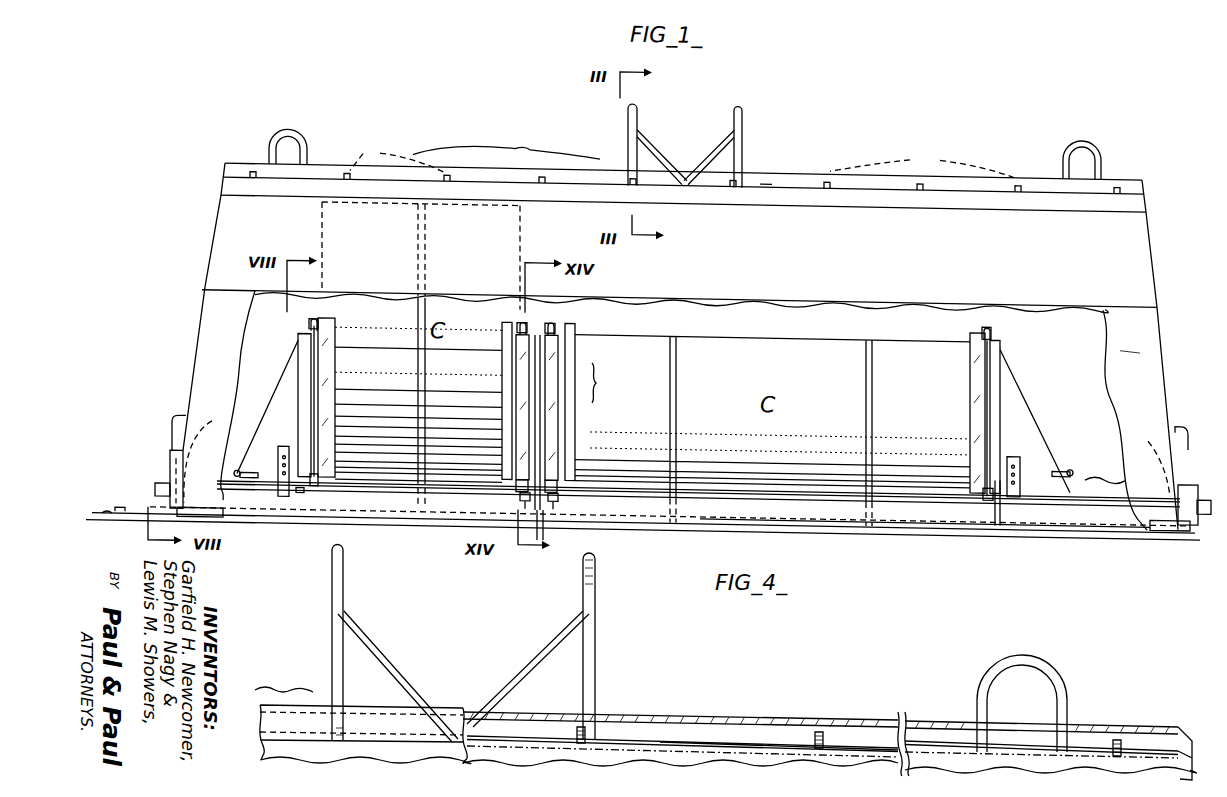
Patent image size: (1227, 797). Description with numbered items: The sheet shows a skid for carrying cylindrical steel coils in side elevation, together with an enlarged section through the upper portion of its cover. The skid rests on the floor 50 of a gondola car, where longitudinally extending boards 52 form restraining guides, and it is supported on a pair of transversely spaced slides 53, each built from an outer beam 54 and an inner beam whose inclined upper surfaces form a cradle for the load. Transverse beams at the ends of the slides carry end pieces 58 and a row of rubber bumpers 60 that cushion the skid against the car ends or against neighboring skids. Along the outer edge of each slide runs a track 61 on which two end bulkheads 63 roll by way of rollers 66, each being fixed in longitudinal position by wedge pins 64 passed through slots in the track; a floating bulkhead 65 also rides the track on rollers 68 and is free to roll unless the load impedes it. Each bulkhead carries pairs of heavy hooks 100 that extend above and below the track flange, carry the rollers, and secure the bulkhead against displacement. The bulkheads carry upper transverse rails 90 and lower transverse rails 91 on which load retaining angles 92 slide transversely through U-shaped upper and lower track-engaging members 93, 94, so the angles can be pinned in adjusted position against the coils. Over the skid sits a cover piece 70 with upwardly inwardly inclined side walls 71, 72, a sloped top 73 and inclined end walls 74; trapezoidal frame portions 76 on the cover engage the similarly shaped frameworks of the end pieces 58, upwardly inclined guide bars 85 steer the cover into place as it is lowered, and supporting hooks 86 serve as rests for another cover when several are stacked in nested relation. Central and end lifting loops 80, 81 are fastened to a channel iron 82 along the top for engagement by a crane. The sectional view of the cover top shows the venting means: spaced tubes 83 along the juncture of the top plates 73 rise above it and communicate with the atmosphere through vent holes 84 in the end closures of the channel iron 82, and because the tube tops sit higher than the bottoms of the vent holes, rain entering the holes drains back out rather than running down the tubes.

In FIG. 1, the floor 50 is at (93, 507).
In FIG. 1, the longitudinally extending boards 52 is at (130, 507).
In FIG. 1, the slide 53 is at (1105, 472).
In FIG. 1, the outer beam 54 is at (901, 516).
In FIG. 1, the end piece 58 is at (170, 470).
In FIG. 1, the bumper 60 is at (155, 484).
In FIG. 1, the track 61 is at (678, 496).
In FIG. 1, the end bulkhead 63 is at (292, 337).
In FIG. 1, the wedge pin 64 is at (280, 456).
In FIG. 1, the floating bulkhead 65 is at (652, 423).
In FIG. 1, the roller 66 is at (237, 469).
In FIG. 1, the roller 68 is at (520, 487).
In FIG. 1, the cover piece 70 is at (506, 138).
In FIG. 4, the cover piece 70 is at (363, 711).
In FIG. 1, the side wall 71 is at (1150, 336).
In FIG. 1, the side wall 72 is at (1140, 224).
In FIG. 1, the sloped top 73 is at (1135, 185).
In FIG. 4, the sloped top 73 is at (925, 741).
In FIG. 1, the inclined end wall 74 is at (205, 230).
In FIG. 1, the frame portion 76 is at (175, 462).
In FIG. 1, the central lifting loop 80 is at (735, 97).
In FIG. 4, the central lifting loop 80 is at (344, 598).
In FIG. 1, the end lifting loop 81 is at (290, 124).
In FIG. 4, the end lifting loop 81 is at (1022, 651).
In FIG. 1, the channel iron 82 is at (766, 166).
In FIG. 4, the channel iron 82 is at (843, 722).
In FIG. 1, the tube 83 is at (685, 163).
In FIG. 4, the tube 83 is at (815, 732).
In FIG. 4, the vent hole 84 is at (1188, 730).
In FIG. 1, the guide bar 85 is at (212, 418).
In FIG. 1, the supporting hook 86 is at (166, 414).
In FIG. 1, the upper transverse rail 90 is at (311, 322).
In FIG. 1, the lower transverse rail 91 is at (312, 430).
In FIG. 1, the load retaining angle 92 is at (336, 355).
In FIG. 1, the upper track-engaging member 93 is at (320, 313).
In FIG. 1, the lower track-engaging member 94 is at (310, 480).
In FIG. 1, the hook 100 is at (542, 518).